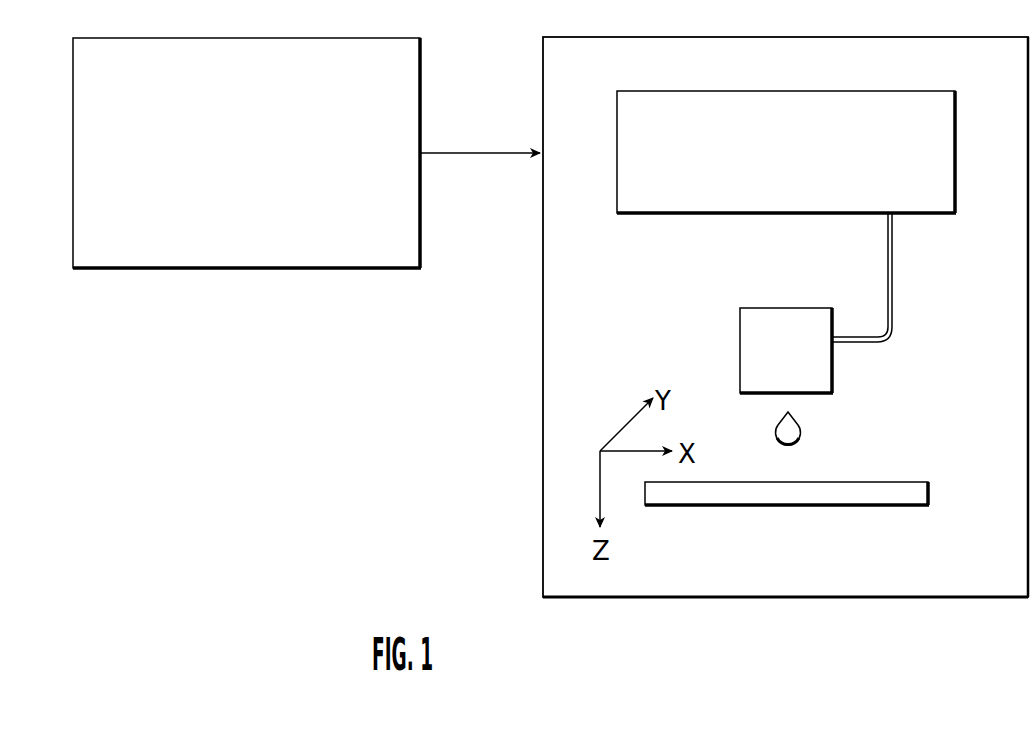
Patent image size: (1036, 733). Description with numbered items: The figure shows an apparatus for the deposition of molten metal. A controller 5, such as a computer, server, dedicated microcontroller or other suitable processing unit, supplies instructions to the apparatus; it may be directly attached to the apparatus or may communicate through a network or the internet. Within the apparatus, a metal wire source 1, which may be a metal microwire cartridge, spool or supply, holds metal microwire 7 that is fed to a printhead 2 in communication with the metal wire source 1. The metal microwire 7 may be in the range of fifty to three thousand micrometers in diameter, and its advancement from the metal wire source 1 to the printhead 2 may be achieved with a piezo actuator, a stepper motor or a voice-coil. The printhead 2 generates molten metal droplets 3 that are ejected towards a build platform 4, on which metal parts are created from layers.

The metal wire source 1 is at (734, 192).
The printhead 2 is at (752, 345).
The molten metal droplets 3 is at (801, 432).
The build platform 4 is at (848, 502).
The controller 5 is at (92, 172).
The metal microwire 7 is at (893, 266).